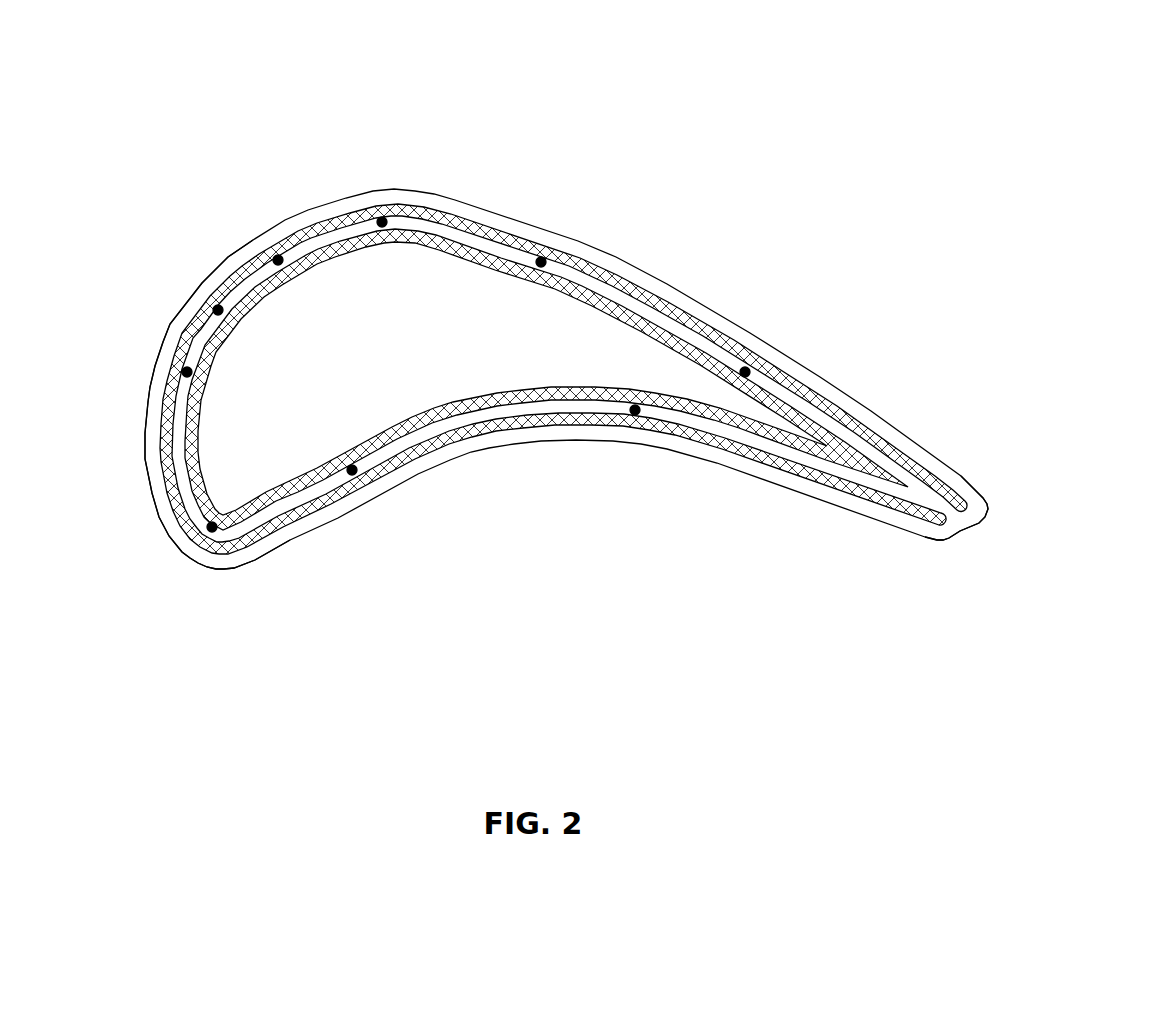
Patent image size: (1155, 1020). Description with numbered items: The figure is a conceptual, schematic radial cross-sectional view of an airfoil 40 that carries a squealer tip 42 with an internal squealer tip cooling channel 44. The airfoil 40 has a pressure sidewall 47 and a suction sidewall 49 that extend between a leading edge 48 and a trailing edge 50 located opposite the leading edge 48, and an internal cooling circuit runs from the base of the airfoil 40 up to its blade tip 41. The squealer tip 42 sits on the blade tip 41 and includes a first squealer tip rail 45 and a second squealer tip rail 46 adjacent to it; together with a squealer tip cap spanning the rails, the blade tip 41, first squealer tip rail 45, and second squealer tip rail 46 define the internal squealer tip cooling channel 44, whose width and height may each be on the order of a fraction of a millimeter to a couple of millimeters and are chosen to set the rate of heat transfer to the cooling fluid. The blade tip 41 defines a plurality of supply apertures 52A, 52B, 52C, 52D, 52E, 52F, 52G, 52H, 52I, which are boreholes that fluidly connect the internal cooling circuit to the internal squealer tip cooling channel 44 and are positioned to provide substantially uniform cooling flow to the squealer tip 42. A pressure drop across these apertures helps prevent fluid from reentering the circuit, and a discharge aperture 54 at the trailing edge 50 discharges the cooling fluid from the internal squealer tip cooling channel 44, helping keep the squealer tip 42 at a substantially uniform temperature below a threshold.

The airfoil 40 is at (903, 166).
The blade tip 41 is at (634, 259).
The squealer tip 42 is at (656, 292).
The internal squealer tip cooling channel 44 is at (681, 324).
The first squealer tip rail 45 is at (821, 393).
The second squealer tip rail 46 is at (854, 439).
The pressure sidewall 47 is at (515, 479).
The leading edge 48 is at (126, 555).
The suction sidewall 49 is at (302, 188).
The trailing edge 50 is at (1039, 542).
The discharge aperture 54 is at (958, 532).
The supply aperture 52A is at (187, 372).
The supply aperture 52B is at (218, 310).
The supply aperture 52C is at (278, 260).
The supply aperture 52D is at (382, 222).
The supply aperture 52E is at (541, 262).
The supply aperture 52F is at (745, 372).
The supply aperture 52G is at (635, 410).
The supply aperture 52H is at (352, 470).
The supply aperture 52I is at (212, 527).